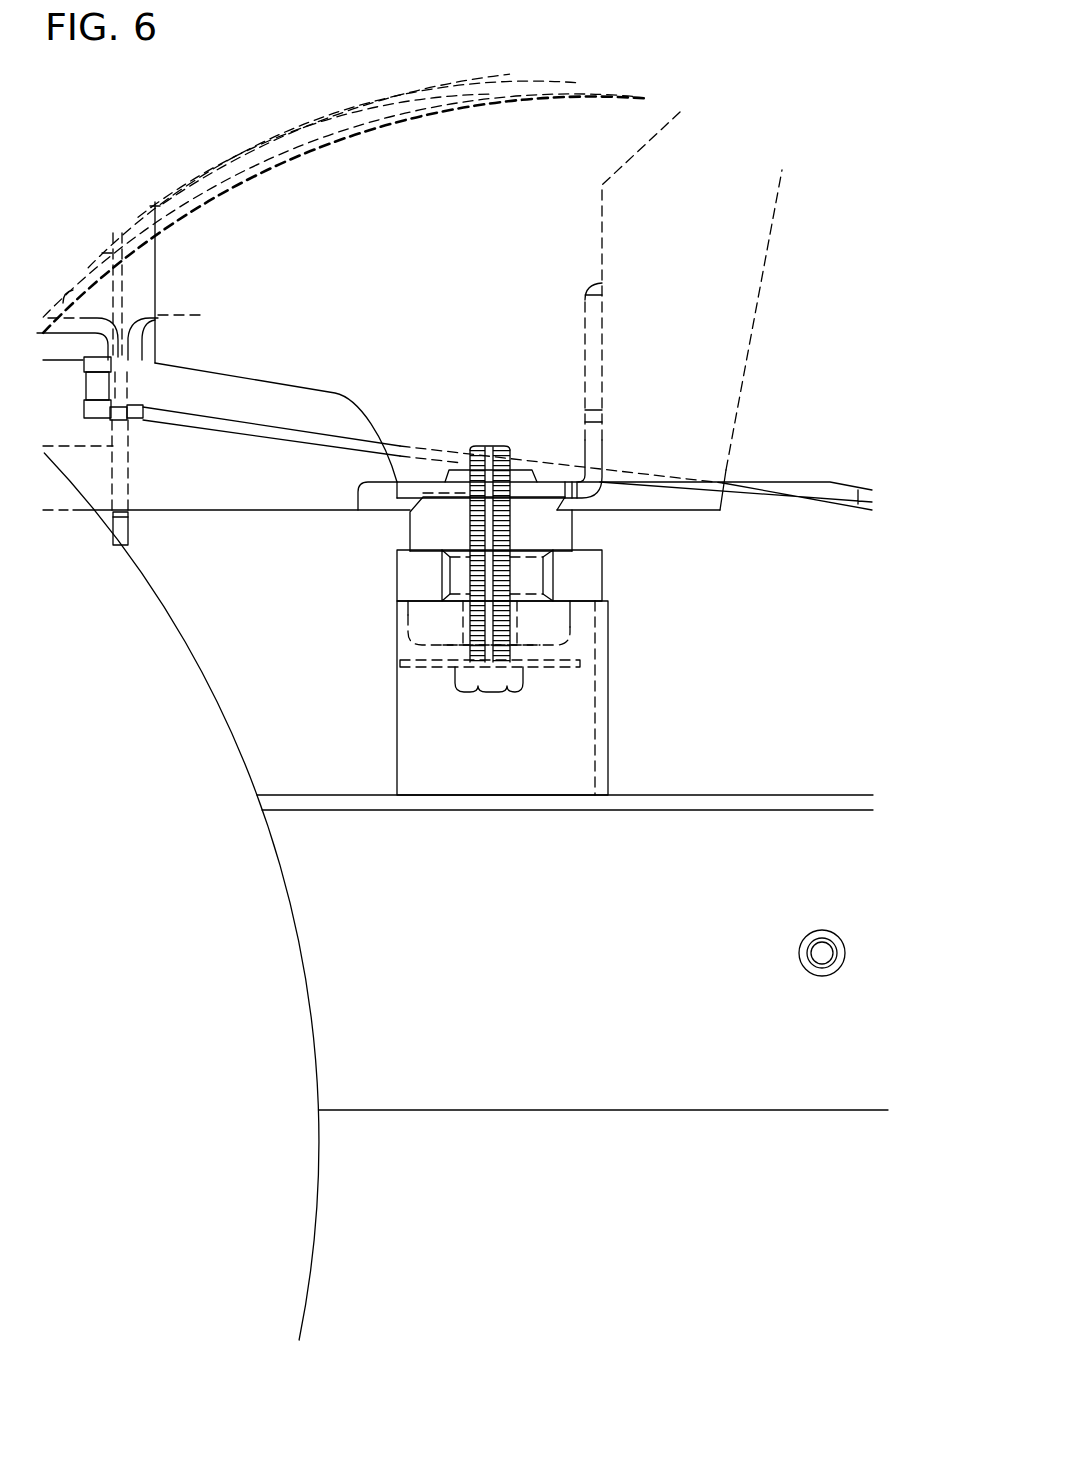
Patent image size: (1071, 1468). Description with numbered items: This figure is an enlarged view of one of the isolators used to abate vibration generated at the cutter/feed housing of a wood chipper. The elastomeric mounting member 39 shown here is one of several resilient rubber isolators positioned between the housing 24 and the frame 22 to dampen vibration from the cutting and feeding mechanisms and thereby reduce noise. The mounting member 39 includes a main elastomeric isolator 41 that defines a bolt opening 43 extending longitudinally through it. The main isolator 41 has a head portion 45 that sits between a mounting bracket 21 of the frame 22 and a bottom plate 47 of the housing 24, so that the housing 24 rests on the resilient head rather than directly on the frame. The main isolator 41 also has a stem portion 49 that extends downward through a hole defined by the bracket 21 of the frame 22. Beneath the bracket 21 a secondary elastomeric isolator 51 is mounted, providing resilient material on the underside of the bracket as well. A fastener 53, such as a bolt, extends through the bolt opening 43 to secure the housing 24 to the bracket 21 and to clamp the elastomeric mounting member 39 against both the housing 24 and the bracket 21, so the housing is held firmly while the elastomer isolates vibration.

The mounting bracket 21 is at (602, 573).
The frame 22 is at (620, 1110).
The housing 24 is at (182, 512).
The elastomeric mounting member 39 is at (600, 528).
The main elastomeric isolator 41 is at (408, 523).
The bolt opening 43 is at (477, 517).
The head portion 45 is at (410, 540).
The bottom plate 47 is at (546, 480).
The stem portion 49 is at (443, 583).
The secondary elastomeric isolator 51 is at (572, 620).
The fastener 53 is at (523, 682).